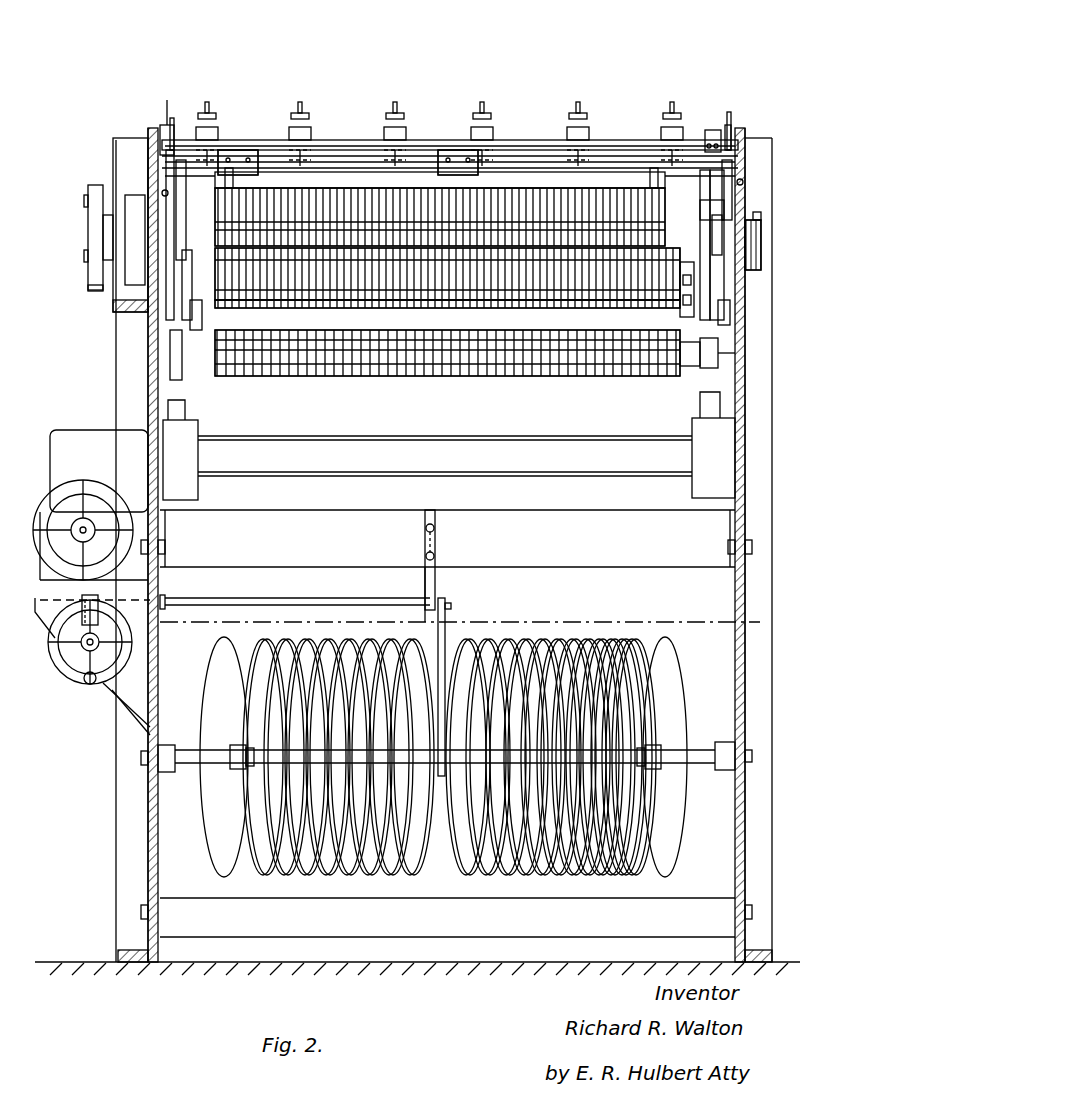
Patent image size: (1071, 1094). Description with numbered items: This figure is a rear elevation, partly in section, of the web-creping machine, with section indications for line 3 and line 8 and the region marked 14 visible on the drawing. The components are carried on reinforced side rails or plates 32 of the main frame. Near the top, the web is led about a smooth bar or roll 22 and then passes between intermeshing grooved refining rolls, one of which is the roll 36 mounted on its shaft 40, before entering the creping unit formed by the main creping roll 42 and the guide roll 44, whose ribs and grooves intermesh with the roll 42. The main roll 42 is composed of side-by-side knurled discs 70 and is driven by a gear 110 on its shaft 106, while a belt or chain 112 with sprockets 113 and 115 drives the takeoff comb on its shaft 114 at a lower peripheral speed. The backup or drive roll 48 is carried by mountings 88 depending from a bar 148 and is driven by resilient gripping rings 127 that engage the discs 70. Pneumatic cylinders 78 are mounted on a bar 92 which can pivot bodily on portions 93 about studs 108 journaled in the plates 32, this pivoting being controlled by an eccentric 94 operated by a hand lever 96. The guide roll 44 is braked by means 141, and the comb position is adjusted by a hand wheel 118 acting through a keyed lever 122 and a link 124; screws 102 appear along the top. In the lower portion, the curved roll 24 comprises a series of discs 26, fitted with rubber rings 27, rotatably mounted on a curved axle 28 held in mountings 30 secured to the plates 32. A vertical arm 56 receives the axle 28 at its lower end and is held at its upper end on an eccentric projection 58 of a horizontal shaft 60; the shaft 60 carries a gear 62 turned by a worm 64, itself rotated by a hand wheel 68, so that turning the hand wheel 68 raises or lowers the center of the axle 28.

The section line 3- 3 is at (362, 115).
The section line 8- 8 is at (141, 626).
The section line 14- 14 is at (200, 322).
The smooth bar or roll 22 is at (440, 447).
The curved roll 24 is at (552, 640).
The discs 26 is at (642, 640).
The rubber rings 27 is at (531, 640).
The curved axle 28 is at (212, 762).
The mountings 30 is at (170, 745).
The side rails or plates 32 is at (150, 822).
The grooved refining roll 36 is at (556, 378).
The shaft 40 is at (678, 376).
The main creping roll 42 is at (590, 228).
The guide roll 44 is at (530, 275).
The drive roll 48 is at (510, 180).
The vertical arm 56 is at (447, 638).
The eccentric projection 58 is at (452, 605).
The horizontal shaft 60 is at (245, 600).
The gear 62 is at (51, 605).
The worm 64 is at (50, 654).
The hand wheel 68 is at (68, 674).
The knurled discs 70 is at (585, 306).
The cylinders 78 is at (226, 150).
The mounting 88 is at (696, 160).
The bar 92 is at (275, 125).
The portions 93 is at (172, 118).
The eccentric 94 is at (735, 160).
The hand lever 96 is at (728, 125).
The adjusting screw 102 is at (207, 112).
The shaft 106 is at (690, 248).
The studs 108 is at (160, 178).
The gear 110 is at (745, 222).
The belt or chain 112 is at (95, 212).
The sprocket 113 is at (85, 283).
The shaft 114 is at (722, 205).
The sprocket 115 is at (84, 205).
The hand wheel 118 is at (50, 512).
The keyed lever 122 is at (190, 465).
The link 124 is at (165, 392).
The resilient gripping rings 127 is at (232, 170).
The braking means 141 is at (694, 285).
The bar 148 is at (335, 162).